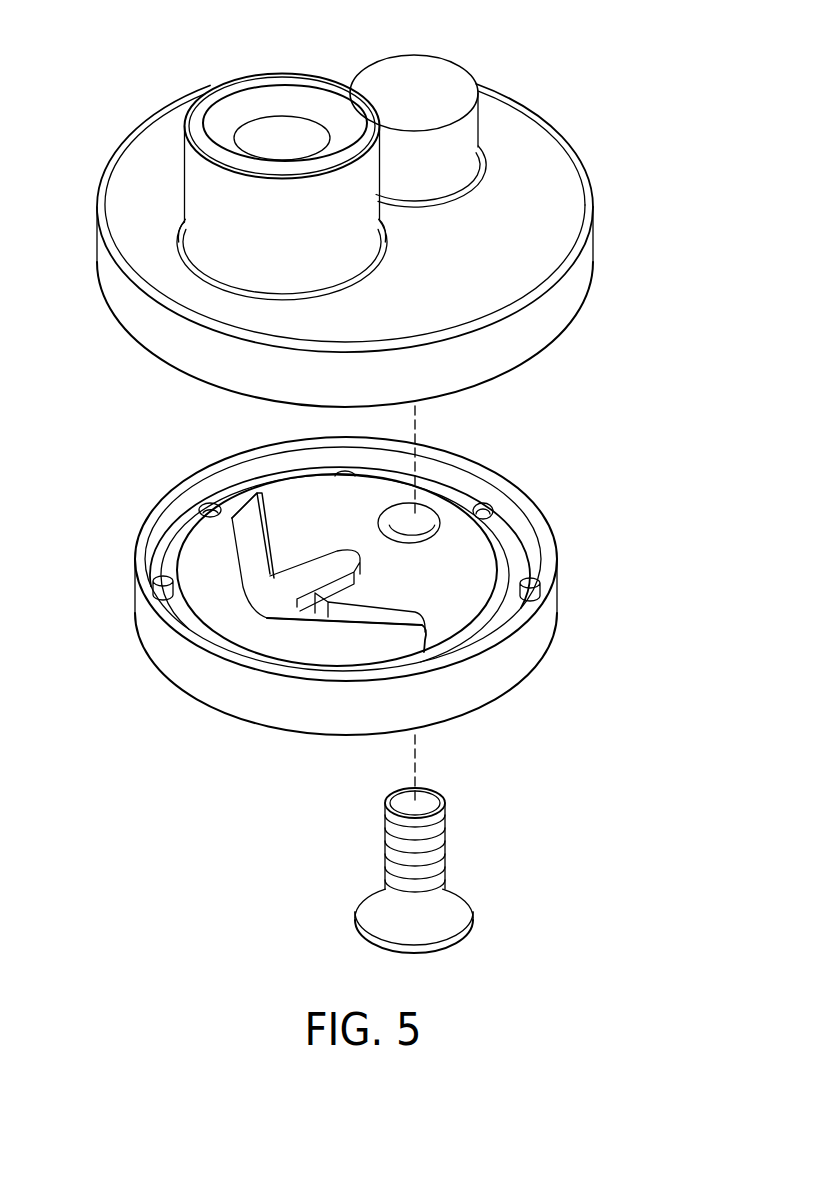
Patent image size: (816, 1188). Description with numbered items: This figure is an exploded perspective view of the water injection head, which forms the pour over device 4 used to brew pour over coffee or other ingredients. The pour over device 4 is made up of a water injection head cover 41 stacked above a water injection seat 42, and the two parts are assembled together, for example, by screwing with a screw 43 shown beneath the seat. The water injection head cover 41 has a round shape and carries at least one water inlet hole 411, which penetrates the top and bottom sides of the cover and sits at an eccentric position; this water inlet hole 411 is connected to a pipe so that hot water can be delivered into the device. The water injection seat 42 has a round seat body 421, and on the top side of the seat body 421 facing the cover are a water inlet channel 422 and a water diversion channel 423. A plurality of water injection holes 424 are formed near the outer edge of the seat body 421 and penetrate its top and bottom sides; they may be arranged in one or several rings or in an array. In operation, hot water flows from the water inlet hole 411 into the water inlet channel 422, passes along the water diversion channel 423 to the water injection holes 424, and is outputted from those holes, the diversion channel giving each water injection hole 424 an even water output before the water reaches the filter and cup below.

The pour over device 4 is at (574, 109).
The water injection head cover 41 is at (370, 217).
The water inlet hole 411 is at (263, 131).
The water injection seat 42 is at (346, 575).
The seat body 421 is at (178, 492).
The water inlet channel 422 is at (268, 609).
The water diversion channel 423 is at (249, 531).
The water injection holes 424 is at (483, 513).
The screw 43 is at (457, 905).